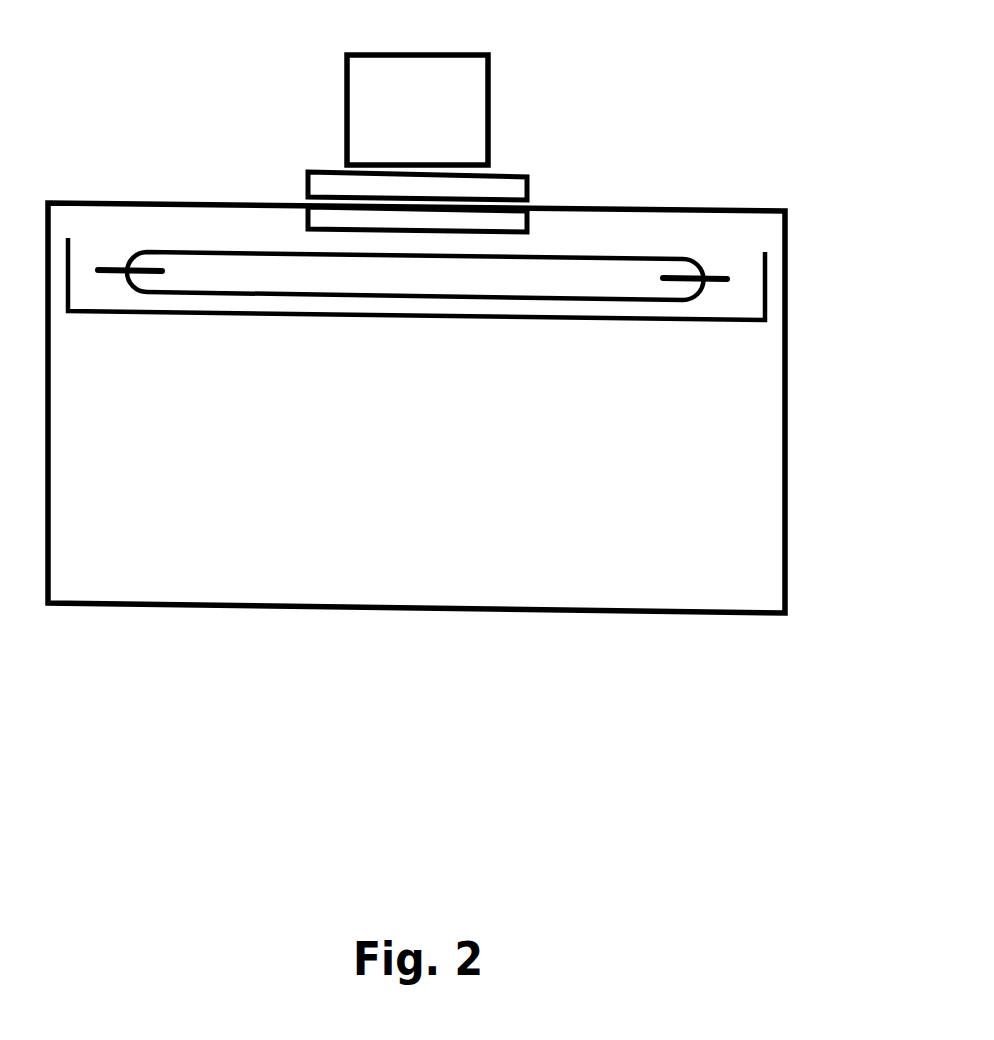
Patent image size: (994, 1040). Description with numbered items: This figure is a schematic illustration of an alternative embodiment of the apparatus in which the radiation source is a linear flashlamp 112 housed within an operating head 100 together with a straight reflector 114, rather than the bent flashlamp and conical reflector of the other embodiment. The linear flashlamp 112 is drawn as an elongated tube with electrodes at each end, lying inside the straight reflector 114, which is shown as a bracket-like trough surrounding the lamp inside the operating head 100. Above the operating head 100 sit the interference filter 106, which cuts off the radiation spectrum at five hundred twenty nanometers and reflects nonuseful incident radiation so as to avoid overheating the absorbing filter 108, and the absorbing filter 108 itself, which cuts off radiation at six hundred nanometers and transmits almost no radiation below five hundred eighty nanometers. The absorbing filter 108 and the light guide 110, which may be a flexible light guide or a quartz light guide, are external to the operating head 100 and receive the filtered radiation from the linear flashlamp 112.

The operating head 100 is at (786, 460).
The interference filter 106 is at (510, 220).
The absorbing filter 108 is at (495, 187).
The light guide 110 is at (397, 153).
The linear flashlamp 112 is at (612, 275).
The straight reflector 114 is at (730, 318).